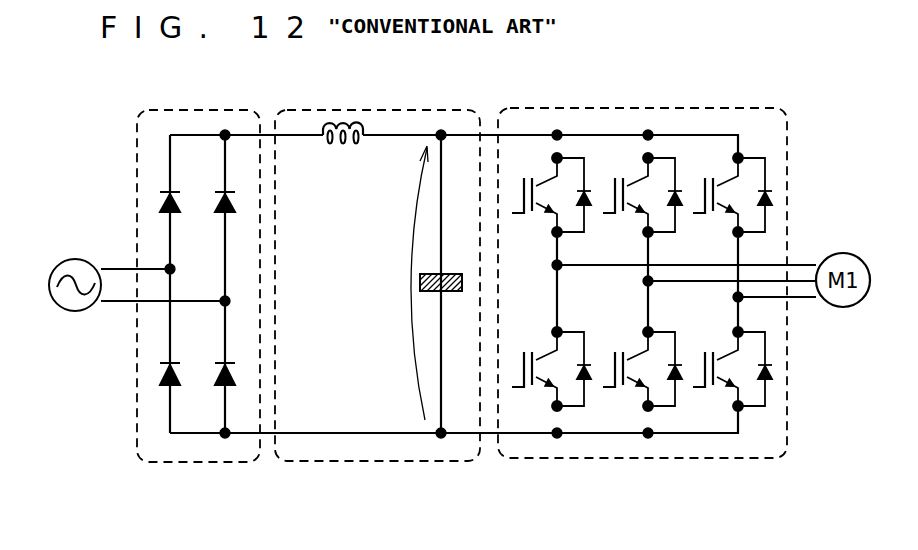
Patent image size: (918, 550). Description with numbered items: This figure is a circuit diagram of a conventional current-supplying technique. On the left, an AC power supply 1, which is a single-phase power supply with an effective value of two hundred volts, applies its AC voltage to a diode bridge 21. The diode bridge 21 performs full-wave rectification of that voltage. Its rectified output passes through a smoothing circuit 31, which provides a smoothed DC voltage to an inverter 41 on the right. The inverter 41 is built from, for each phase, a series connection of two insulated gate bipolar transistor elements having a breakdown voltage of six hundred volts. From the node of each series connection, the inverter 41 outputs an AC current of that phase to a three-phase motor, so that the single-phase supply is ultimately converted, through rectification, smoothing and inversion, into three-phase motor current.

The AC power supply 1 is at (75, 311).
The diode bridge 21 is at (222, 462).
The smoothing circuit 31 is at (383, 461).
The inverter 41 is at (608, 458).